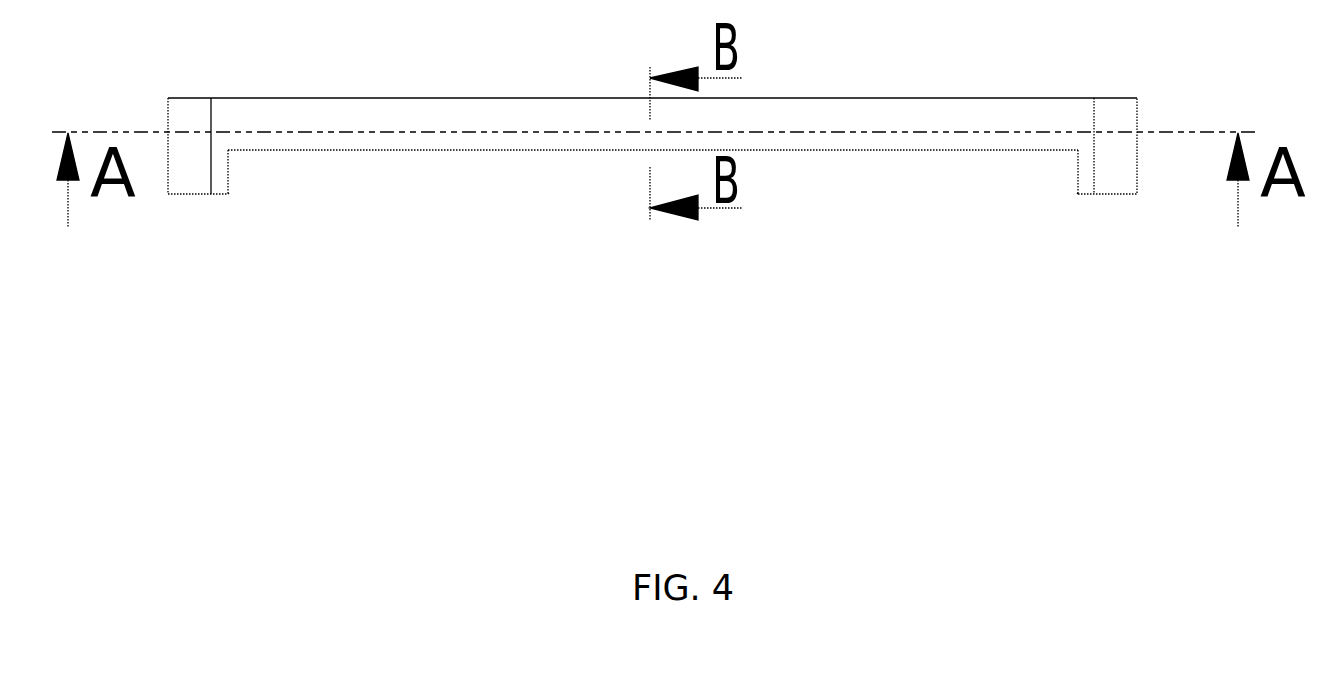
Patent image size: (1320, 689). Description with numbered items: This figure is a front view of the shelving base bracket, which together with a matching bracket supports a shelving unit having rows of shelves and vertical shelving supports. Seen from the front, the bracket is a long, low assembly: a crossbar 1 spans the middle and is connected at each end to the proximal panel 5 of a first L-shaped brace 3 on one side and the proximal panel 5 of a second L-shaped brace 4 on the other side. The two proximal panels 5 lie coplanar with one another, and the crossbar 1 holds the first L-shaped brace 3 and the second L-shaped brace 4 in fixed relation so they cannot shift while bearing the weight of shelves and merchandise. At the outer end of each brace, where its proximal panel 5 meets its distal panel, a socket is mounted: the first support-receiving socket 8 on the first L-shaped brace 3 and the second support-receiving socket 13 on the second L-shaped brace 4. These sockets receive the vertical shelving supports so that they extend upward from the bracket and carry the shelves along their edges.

The crossbar 1 is at (882, 150).
The first L-shaped brace 3 is at (228, 188).
The second L-shaped brace 4 is at (1079, 188).
The proximal panel 5 is at (225, 166).
The first support-receiving socket 8 is at (180, 194).
The second support-receiving socket 13 is at (1135, 182).